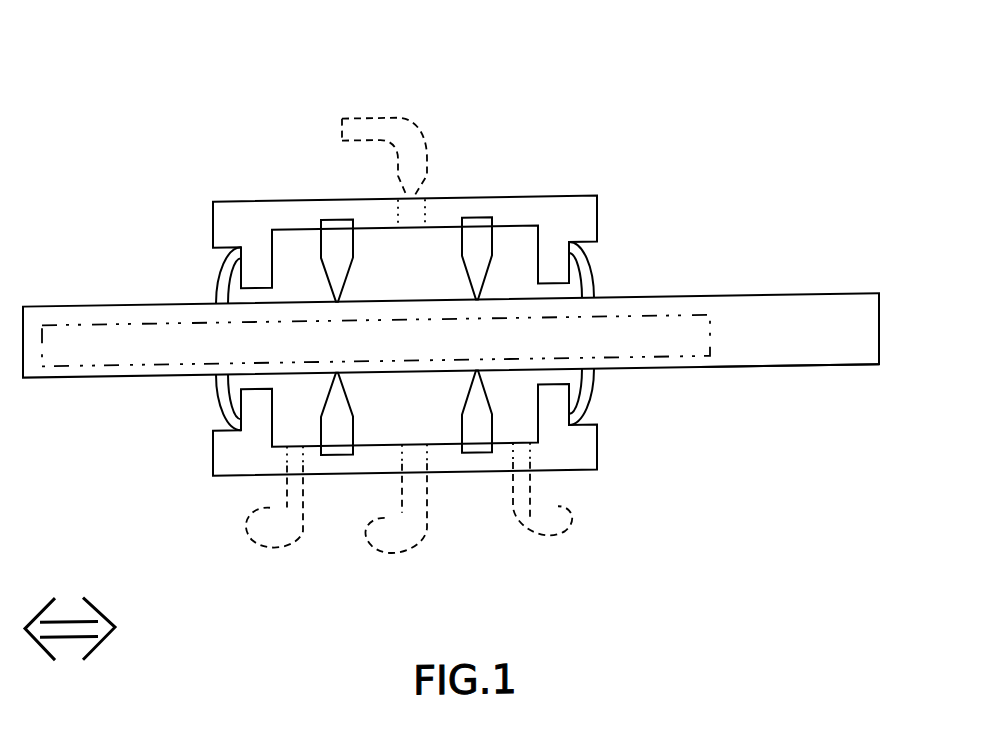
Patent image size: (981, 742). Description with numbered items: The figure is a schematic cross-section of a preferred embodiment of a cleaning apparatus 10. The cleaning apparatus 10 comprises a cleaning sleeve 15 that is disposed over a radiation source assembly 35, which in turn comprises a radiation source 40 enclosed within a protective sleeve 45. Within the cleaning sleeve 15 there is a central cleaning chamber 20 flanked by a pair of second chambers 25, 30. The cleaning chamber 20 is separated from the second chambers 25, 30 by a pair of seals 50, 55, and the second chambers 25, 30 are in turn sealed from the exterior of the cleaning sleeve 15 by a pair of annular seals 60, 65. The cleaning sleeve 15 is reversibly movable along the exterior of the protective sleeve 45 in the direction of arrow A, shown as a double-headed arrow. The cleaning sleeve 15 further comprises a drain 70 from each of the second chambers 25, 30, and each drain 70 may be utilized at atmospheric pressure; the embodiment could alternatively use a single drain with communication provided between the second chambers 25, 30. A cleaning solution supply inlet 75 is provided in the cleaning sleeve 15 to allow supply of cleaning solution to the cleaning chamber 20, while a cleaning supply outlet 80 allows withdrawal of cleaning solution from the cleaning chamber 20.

The cleaning apparatus 10 is at (527, 136).
The cleaning sleeve 15 is at (573, 215).
The cleaning chamber 20 is at (420, 286).
The second chamber 25 is at (313, 285).
The second chamber 30 is at (530, 281).
The radiation source assembly 35 is at (820, 303).
The radiation source 40 is at (678, 336).
The protective sleeve 45 is at (763, 377).
The seal 50 is at (335, 230).
The seal 55 is at (475, 233).
The annular seal 60 is at (230, 286).
The annular seal 65 is at (578, 275).
The drain 70 is at (287, 463).
The cleaning solution supply inlet 75 is at (418, 222).
The cleaning supply outlet 80 is at (410, 464).
The arrow A is at (72, 621).